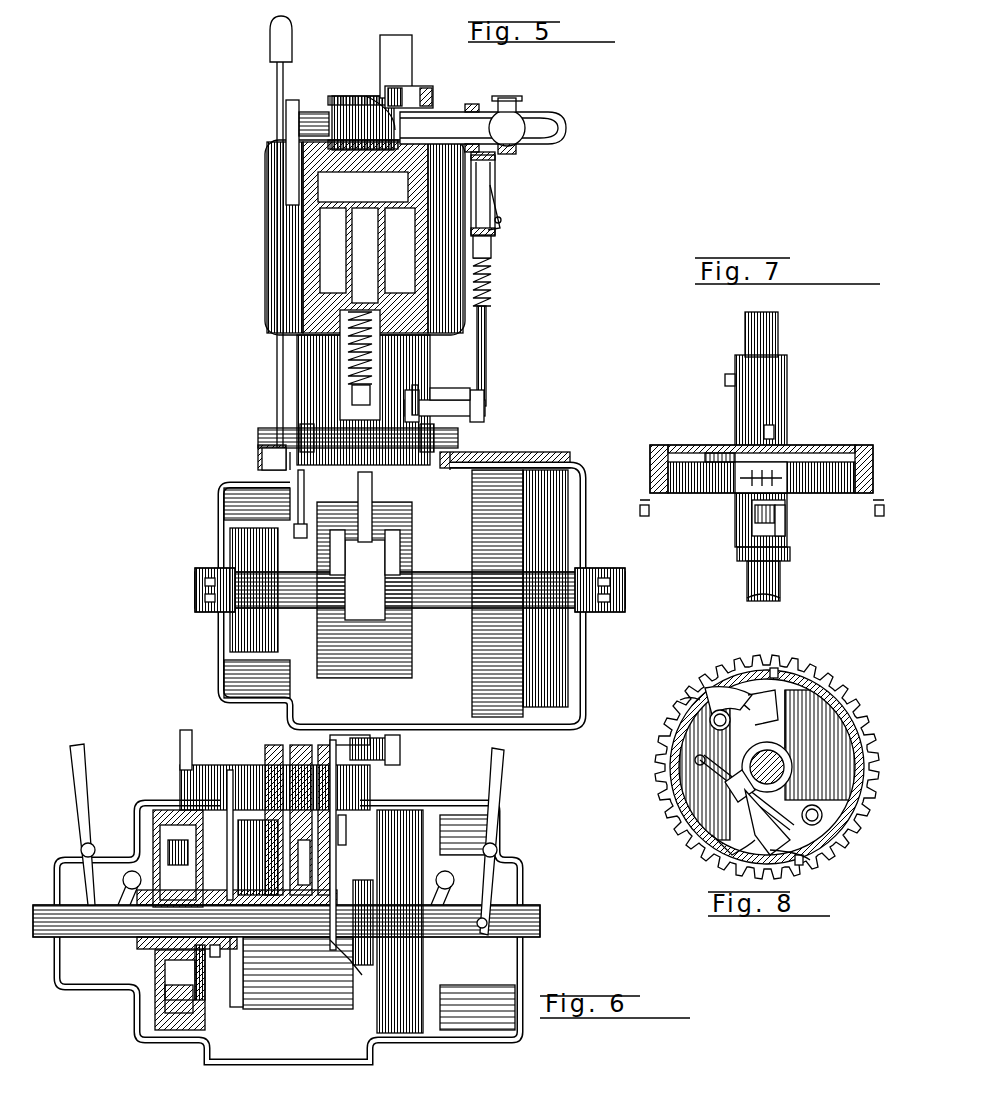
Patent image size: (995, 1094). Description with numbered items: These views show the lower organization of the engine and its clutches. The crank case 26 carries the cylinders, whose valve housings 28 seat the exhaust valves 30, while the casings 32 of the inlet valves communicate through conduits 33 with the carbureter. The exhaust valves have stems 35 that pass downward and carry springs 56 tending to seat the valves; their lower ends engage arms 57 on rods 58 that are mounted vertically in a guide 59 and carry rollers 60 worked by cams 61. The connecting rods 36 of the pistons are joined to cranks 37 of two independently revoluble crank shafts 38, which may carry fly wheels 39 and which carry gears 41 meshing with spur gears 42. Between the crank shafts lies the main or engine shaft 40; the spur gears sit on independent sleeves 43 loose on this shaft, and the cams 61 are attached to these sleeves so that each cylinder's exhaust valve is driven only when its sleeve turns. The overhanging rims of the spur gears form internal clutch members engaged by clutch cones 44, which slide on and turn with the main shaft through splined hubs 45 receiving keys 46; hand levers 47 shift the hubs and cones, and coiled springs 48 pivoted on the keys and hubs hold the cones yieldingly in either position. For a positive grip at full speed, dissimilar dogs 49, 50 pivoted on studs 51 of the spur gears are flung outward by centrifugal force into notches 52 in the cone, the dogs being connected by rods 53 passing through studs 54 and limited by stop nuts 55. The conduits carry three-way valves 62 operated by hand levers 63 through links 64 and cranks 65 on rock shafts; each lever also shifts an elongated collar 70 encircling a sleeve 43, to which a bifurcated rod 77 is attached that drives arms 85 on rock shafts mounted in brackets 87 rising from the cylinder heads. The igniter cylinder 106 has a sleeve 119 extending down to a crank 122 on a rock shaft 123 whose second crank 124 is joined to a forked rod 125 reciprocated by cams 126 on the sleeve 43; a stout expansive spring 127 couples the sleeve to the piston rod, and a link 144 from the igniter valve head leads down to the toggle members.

In FIG. 5, the crank case 26 is at (584, 540).
In FIG. 6, the crank case 26 is at (482, 1025).
In FIG. 5, the valve housings 28 is at (338, 186).
In FIG. 5, the exhaust valves 30 is at (368, 206).
In FIG. 5, the inlet valve casings 32 is at (350, 96).
In FIG. 5, the conduits 33 is at (546, 136).
In FIG. 5, the exhaust valve stems 35 is at (330, 262).
In FIG. 5, the connecting rods 36 is at (372, 490).
In FIG. 5, the cranks 37 is at (392, 556).
In FIG. 5, the crank shafts 38 is at (445, 596).
In FIG. 5, the fly wheels 39 is at (565, 652).
In FIG. 6, the main or engine shaft 40 is at (272, 990).
In FIG. 7, the main or engine shaft 40 is at (782, 576).
In FIG. 8, the main or engine shaft 40 is at (767, 767).
In FIG. 5, the gears 41 is at (278, 630).
In FIG. 6, the spur gears 42 is at (378, 990).
In FIG. 7, the spur gears 42 is at (840, 446).
In FIG. 8, the spur gears 42 is at (808, 682).
In FIG. 6, the sleeves 43 is at (312, 990).
In FIG. 7, the sleeves 43 is at (780, 402).
In FIG. 6, the clutch cones 44 is at (160, 955).
In FIG. 7, the clutch cones 44 is at (716, 490).
In FIG. 8, the clutch cones 44 is at (820, 712).
In FIG. 6, the hubs 45 is at (110, 944).
In FIG. 7, the hubs 45 is at (742, 538).
In FIG. 7, the keys 46 is at (778, 530).
In FIG. 6, the hand levers 47 is at (78, 810).
In FIG. 6, the coiled springs 48 is at (130, 870).
In FIG. 7, the coiled springs 48 is at (780, 516).
In FIG. 6, the dog 49 is at (178, 1010).
In FIG. 8, the dog 49 is at (798, 862).
In FIG. 6, the dog 50 is at (172, 848).
In FIG. 7, the dog 50 is at (740, 456).
In FIG. 8, the dog 50 is at (722, 700).
In FIG. 8, the studs 51 is at (708, 720).
In FIG. 8, the notches 52 is at (774, 668).
In FIG. 6, the rods 53 is at (165, 990).
In FIG. 8, the rods 53 is at (712, 835).
In FIG. 8, the studs 54 is at (740, 795).
In FIG. 6, the stop nuts 55 is at (318, 800).
In FIG. 8, the stop nuts 55 is at (728, 788).
In FIG. 5, the springs 56 is at (348, 362).
In FIG. 5, the arms 57 is at (352, 394).
In FIG. 6, the rods 58 is at (290, 760).
In FIG. 6, the guide 59 is at (265, 765).
In FIG. 6, the rollers 60 is at (262, 850).
In FIG. 7, the cams 61 is at (724, 380).
In FIG. 5, the three-way valves 62 is at (528, 112).
In FIG. 5, the hand levers 63 is at (276, 90).
In FIG. 5, the links 64 is at (284, 126).
In FIG. 5, the cranks 65 is at (300, 106).
In FIG. 6, the collars 70 is at (372, 900).
In FIG. 6, the bifurcated rod 77 is at (228, 830).
In FIG. 5, the arms 85 is at (436, 92).
In FIG. 5, the brackets 87 is at (396, 58).
In FIG. 5, the igniter cylinder 106 is at (486, 184).
In FIG. 5, the sleeve 119 is at (487, 352).
In FIG. 5, the crank 122 is at (485, 408).
In FIG. 6, the crank 122 is at (400, 746).
In FIG. 5, the rock shaft 123 is at (450, 396).
In FIG. 5, the second crank 124 is at (418, 390).
In FIG. 6, the rod 125 is at (332, 950).
In FIG. 7, the cams 126 is at (778, 428).
In FIG. 5, the expansive spring 127 is at (492, 268).
In FIG. 5, the link 144 is at (500, 214).